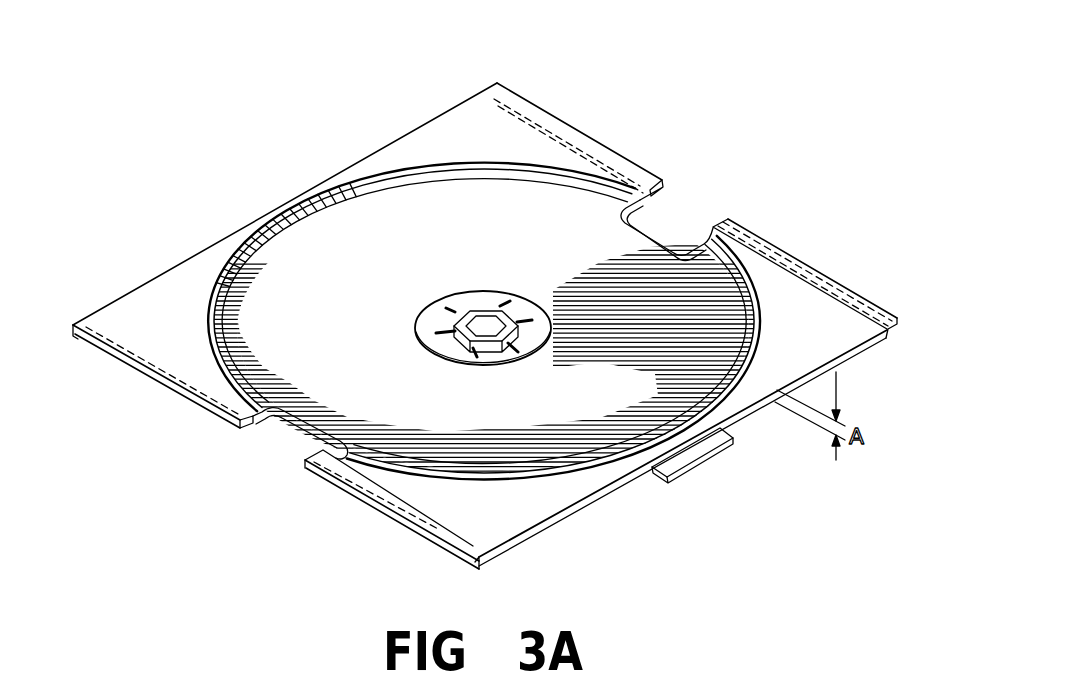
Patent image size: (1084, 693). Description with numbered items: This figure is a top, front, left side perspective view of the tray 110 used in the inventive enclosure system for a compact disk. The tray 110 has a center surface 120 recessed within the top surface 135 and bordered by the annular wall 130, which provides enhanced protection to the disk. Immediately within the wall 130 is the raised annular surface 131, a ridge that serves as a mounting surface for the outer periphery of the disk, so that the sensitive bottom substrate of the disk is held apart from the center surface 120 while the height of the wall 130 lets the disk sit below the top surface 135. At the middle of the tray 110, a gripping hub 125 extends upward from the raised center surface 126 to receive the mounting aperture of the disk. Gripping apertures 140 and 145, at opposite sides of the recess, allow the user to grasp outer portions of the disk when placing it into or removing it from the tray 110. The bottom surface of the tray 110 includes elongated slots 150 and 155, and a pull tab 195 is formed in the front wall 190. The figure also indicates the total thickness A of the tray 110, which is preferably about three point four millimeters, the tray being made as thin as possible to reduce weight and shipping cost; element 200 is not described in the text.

The tray 110 is at (336, 131).
The center surface 120 is at (503, 417).
The gripping hub 125 is at (507, 308).
The raised center surface 126 is at (542, 330).
The wall 130 is at (258, 251).
The raised annular surface 131 is at (232, 310).
The top surface 135 is at (173, 332).
The gripping aperture 140 is at (680, 212).
The gripping aperture 145 is at (290, 444).
The elongated slot 150 is at (486, 576).
The elongated slot 155 is at (903, 350).
The front wall 190 is at (590, 502).
The pull tab 195 is at (702, 454).
The rear edge of tray 200 is at (172, 268).